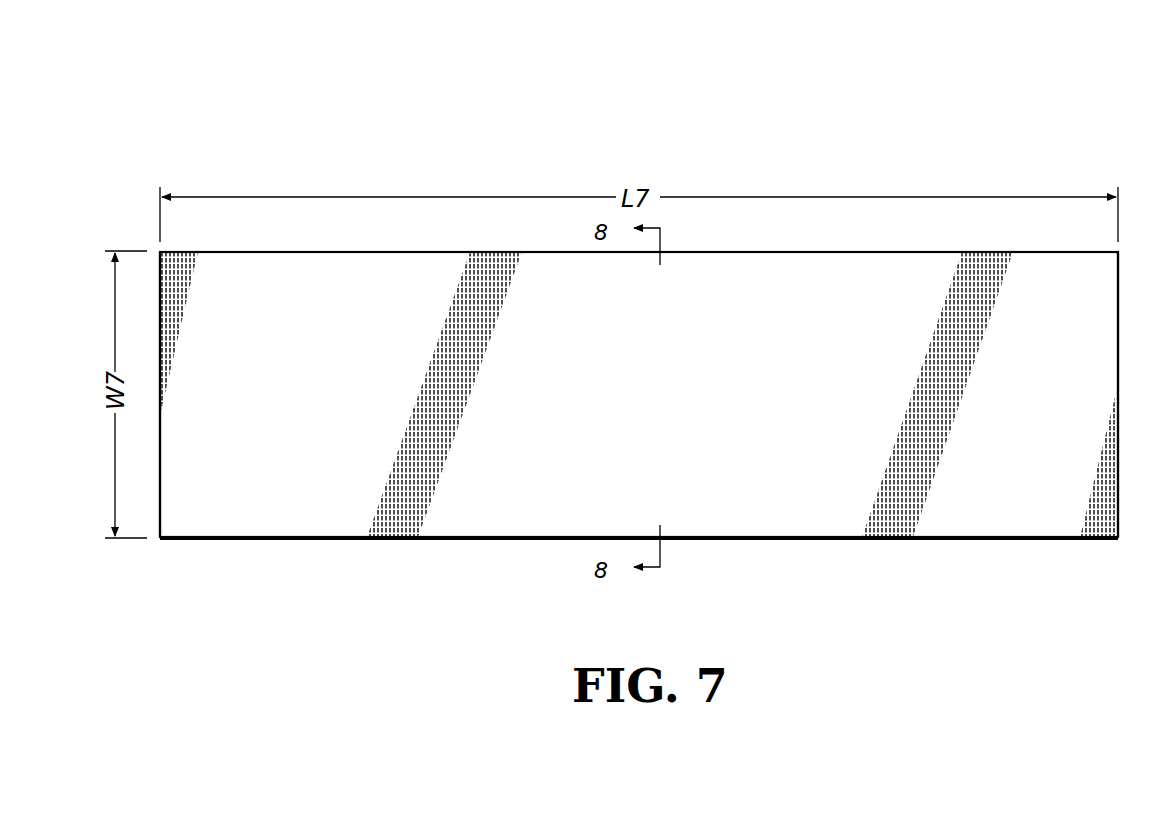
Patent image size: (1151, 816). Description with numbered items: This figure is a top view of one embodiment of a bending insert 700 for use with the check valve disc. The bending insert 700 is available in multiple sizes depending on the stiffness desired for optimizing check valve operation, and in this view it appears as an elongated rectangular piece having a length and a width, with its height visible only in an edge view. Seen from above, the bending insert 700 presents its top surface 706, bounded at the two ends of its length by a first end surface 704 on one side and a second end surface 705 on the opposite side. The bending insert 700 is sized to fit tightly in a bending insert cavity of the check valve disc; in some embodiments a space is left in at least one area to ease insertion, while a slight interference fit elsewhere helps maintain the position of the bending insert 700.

The bending insert 700 is at (336, 116).
The first end surface 704 is at (160, 470).
The second end surface 705 is at (1118, 500).
The top surface 706 is at (927, 292).